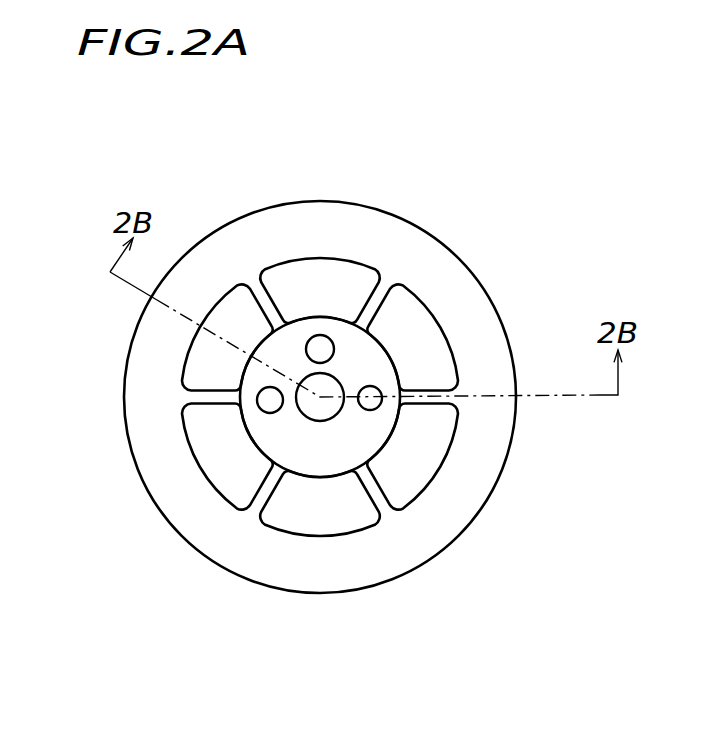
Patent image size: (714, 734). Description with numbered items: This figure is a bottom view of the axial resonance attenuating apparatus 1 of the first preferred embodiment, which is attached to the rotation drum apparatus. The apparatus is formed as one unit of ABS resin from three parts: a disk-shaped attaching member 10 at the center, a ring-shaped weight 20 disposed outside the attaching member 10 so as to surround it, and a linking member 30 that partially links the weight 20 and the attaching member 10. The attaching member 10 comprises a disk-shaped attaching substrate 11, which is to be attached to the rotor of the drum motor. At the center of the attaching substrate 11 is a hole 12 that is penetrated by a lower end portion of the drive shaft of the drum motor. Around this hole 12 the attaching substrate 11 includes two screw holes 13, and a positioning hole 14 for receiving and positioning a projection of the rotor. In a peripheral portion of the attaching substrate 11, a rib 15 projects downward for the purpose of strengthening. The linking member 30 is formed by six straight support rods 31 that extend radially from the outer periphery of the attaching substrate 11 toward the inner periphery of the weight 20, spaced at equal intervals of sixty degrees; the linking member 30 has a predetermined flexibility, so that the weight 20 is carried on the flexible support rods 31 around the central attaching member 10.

The axial resonance attenuating apparatus 1 is at (418, 210).
The attaching member 10 is at (343, 478).
The attaching substrate 11 is at (363, 425).
The hole 12 is at (322, 421).
The screw holes 13 is at (262, 395).
The positioning hole 14 is at (318, 337).
The rib 15 is at (373, 327).
The weight 20 is at (488, 502).
The linking member 30 is at (425, 403).
The support rods 31 is at (362, 300).